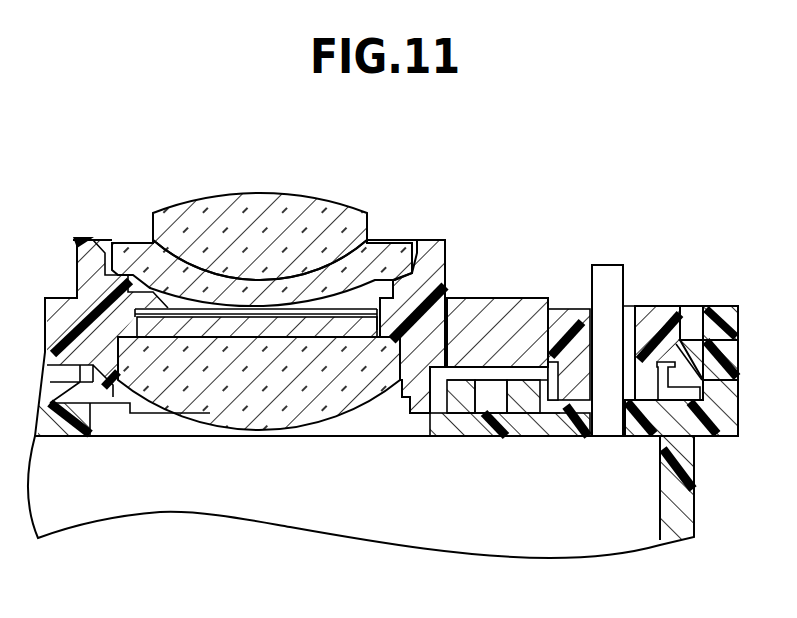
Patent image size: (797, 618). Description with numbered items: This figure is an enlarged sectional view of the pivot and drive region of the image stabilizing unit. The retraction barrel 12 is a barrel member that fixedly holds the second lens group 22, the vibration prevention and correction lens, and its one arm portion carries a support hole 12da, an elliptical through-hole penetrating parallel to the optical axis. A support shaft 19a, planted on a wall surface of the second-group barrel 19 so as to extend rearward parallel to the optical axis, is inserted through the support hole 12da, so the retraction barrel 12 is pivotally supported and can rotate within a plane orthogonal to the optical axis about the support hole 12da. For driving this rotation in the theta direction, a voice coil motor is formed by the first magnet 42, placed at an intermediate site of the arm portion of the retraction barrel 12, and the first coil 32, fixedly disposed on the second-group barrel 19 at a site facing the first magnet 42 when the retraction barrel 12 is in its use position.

The retraction barrel 12 is at (434, 240).
The support hole 12da is at (630, 303).
The group 2 barrel 19 is at (683, 500).
The support shaft 19a is at (607, 272).
The second lens group 22 is at (320, 198).
The first coil 32 is at (493, 387).
The first magnet 42 is at (470, 312).